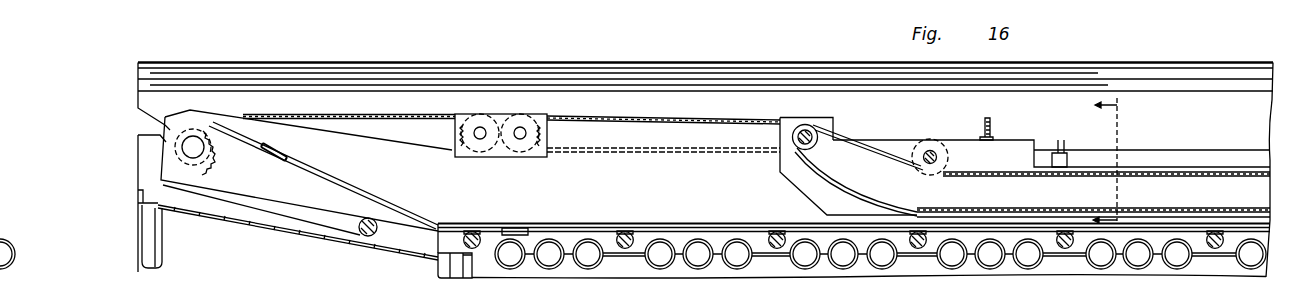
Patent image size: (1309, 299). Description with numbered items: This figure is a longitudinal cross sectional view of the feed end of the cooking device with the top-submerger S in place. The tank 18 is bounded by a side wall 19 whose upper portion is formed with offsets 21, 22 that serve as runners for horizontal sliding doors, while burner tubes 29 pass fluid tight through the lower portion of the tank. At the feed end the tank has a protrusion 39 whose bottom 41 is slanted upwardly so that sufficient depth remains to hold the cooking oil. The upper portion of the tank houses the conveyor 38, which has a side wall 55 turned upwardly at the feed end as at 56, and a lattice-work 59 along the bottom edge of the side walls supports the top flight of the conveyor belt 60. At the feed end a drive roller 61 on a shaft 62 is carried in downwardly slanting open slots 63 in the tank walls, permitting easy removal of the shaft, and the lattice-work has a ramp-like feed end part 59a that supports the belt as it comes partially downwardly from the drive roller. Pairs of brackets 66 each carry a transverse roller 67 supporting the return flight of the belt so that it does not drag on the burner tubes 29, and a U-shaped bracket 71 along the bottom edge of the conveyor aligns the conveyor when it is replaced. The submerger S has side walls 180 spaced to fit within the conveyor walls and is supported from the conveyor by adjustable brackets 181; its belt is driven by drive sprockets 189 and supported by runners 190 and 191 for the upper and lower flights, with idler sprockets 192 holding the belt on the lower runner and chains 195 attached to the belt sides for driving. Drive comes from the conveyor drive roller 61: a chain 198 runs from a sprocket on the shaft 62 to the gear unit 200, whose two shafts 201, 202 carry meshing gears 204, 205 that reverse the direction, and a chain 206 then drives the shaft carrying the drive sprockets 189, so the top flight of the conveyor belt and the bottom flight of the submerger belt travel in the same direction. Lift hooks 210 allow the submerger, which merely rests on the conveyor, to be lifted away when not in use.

The tank 18 is at (1284, 119).
The side wall 19 is at (1271, 102).
The offset 21 is at (408, 78).
The offset 22 is at (479, 68).
The burner tubes 29 is at (520, 267).
The conveyor 38 is at (1148, 150).
The protrusion 39 is at (227, 214).
The bottom 41 is at (284, 228).
The side wall 55 is at (603, 152).
The upturned end 56 is at (232, 123).
The lattice-work 59 is at (580, 226).
The ramp-like feed end part 59a is at (364, 186).
The conveyor belt 60 is at (257, 146).
The drive roller 61 is at (215, 159).
The shaft 62 is at (208, 143).
The open slots 63 is at (158, 122).
The brackets 66 is at (632, 230).
The transverse roller 67 is at (462, 235).
The U-shaped bracket 71 is at (520, 229).
The side wall 180 is at (1024, 140).
The adjustable bracket 181 is at (992, 128).
The drive sprocket 189 is at (812, 145).
The runner 190 is at (984, 180).
The runner 191 is at (1026, 209).
The idler sprocket 192 is at (953, 157).
The chain 195 is at (914, 168).
The chain 198 is at (380, 118).
The gear unit 200 is at (550, 140).
The shaft 201 is at (484, 148).
The shaft 202 is at (522, 151).
The gear 204 is at (483, 110).
The gear 205 is at (524, 120).
The chain 206 is at (665, 118).
The lift hooks 210 is at (1062, 148).
The submerger S is at (911, 139).